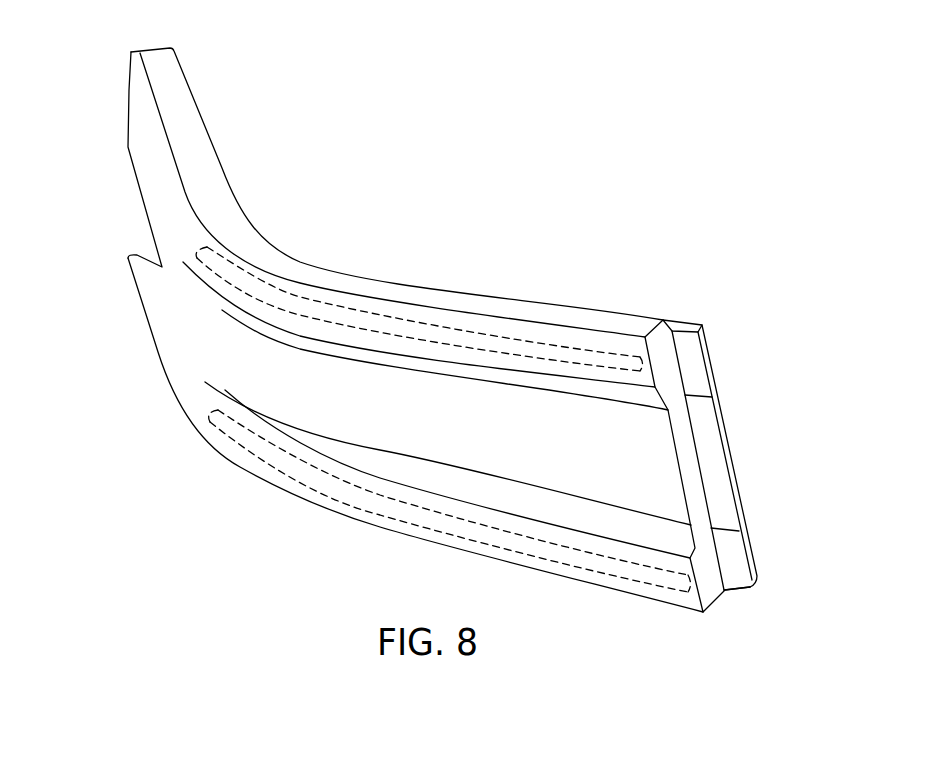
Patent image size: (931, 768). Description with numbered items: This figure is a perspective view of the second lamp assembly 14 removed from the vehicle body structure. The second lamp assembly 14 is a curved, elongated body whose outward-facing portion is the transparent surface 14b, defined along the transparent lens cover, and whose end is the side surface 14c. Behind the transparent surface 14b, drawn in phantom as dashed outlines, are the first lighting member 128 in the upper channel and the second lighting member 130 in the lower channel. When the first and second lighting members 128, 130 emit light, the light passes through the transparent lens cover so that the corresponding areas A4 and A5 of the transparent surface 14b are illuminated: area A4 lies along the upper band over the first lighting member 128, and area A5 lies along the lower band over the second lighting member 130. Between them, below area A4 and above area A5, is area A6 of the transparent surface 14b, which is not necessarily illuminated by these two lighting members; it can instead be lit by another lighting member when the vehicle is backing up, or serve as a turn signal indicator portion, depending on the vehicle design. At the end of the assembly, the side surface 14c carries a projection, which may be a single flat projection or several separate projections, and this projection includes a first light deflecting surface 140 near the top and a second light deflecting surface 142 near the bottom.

The second lamp assembly 14 is at (578, 153).
The transparent surface 14b is at (192, 343).
The side surface 14c is at (690, 461).
The first lighting member 128 is at (537, 340).
The second lighting member 130 is at (533, 558).
The first light deflecting surface 140 is at (692, 365).
The second light deflecting surface 142 is at (735, 557).
The area A4 is at (405, 312).
The area A5 is at (405, 527).
The area A6 is at (327, 400).